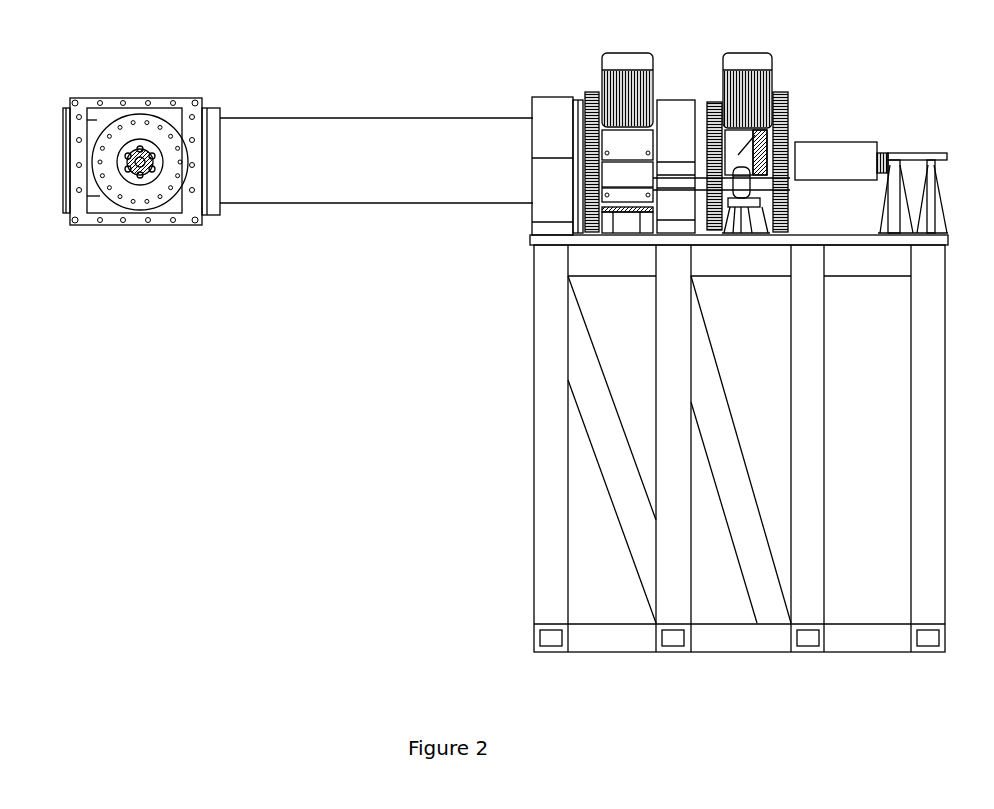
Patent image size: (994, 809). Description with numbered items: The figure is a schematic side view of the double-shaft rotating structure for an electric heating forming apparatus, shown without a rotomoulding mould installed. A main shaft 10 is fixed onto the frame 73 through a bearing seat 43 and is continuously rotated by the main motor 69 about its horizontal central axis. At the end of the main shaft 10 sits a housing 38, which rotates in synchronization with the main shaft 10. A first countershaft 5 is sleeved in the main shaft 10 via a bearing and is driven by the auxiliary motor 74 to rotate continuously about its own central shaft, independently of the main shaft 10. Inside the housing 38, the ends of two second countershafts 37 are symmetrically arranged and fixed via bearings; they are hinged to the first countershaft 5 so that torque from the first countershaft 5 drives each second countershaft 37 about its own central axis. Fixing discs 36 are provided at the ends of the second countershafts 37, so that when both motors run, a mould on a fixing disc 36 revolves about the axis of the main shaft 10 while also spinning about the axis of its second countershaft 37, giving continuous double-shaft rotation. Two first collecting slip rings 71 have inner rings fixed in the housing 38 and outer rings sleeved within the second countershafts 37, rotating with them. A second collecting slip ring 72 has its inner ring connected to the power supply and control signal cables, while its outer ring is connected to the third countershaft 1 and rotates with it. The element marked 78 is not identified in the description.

The third countershaft 1 is at (793, 140).
The first countershaft 5 is at (788, 100).
The main shaft 10 is at (418, 135).
The fixing disc 36 is at (107, 147).
The second countershaft 37 is at (145, 140).
The housing 38 is at (177, 117).
The bearing seat 43 is at (553, 137).
The main motor 69 is at (628, 75).
The first collecting slip ring 71 is at (133, 137).
The second collecting slip ring 72 is at (845, 152).
The frame 73 is at (813, 290).
The auxiliary motor 74 is at (755, 70).
The actuator 78 is at (745, 200).